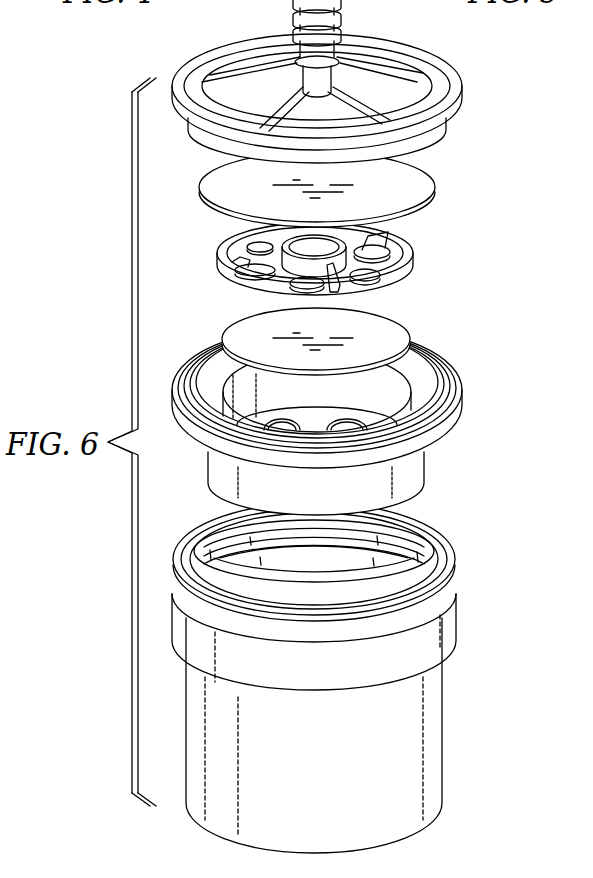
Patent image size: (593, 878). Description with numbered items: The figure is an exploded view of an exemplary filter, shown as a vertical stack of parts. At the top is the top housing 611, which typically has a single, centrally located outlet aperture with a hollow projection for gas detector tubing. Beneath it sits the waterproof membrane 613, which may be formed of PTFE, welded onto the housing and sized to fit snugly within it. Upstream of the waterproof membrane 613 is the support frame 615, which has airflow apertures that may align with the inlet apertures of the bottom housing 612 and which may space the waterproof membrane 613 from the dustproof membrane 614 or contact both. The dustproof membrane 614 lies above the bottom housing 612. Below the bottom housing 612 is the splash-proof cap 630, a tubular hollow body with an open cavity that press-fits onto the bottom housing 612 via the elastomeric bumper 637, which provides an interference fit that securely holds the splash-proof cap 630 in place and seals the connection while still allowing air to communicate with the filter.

The top housing 611 is at (407, 90).
The waterproof membrane 613 is at (410, 183).
The support frame 615 is at (406, 273).
The dustproof membrane 614 is at (390, 335).
The bottom housing 612 is at (467, 382).
The elastomeric bumper 637 is at (447, 536).
The splash-proof cap 630 is at (468, 567).